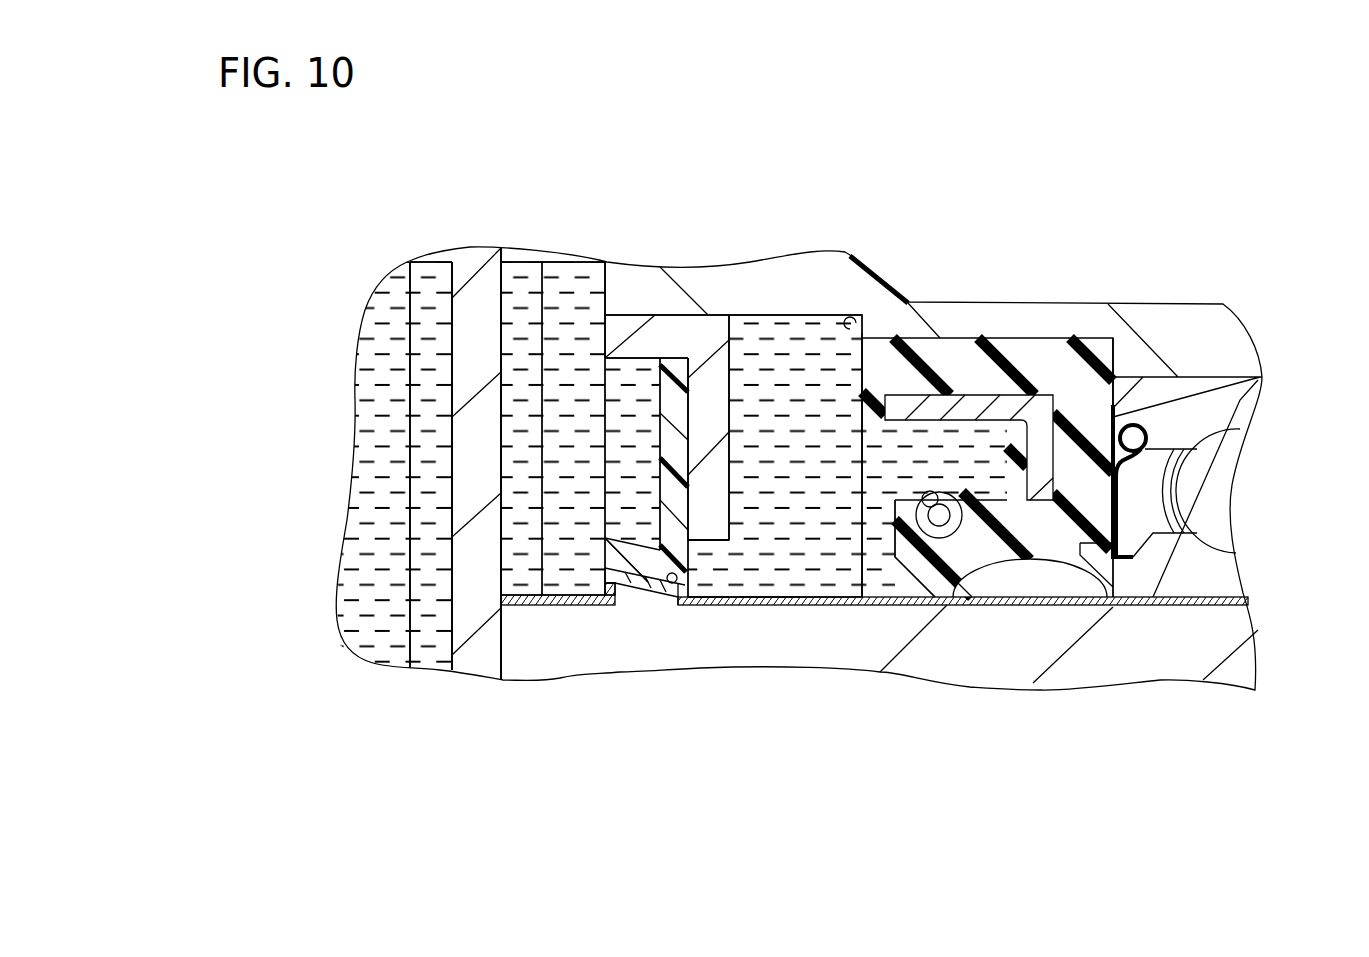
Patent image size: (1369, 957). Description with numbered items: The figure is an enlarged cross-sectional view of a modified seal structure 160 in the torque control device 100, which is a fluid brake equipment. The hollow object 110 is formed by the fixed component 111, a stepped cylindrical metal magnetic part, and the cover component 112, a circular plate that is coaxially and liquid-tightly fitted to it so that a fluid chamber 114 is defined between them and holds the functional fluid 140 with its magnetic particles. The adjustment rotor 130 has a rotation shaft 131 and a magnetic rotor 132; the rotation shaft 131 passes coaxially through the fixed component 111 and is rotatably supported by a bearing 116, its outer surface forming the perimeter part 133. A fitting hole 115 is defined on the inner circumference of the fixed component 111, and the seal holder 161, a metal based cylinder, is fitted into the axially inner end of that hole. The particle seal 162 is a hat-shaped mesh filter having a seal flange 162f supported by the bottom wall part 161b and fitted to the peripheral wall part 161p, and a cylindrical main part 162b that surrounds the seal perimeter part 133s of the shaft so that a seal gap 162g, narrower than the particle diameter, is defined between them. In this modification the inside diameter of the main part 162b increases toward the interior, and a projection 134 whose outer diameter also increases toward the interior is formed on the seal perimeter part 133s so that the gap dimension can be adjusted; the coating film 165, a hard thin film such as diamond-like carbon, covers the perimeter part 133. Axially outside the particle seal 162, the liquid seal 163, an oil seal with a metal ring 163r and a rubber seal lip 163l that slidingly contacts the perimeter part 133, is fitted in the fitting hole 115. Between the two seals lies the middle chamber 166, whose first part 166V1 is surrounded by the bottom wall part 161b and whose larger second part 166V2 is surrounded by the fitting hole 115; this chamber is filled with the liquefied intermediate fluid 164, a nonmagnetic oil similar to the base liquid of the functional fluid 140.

The torque control device 100 is at (1235, 236).
The hollow object 110 is at (433, 152).
The fixed component 111 is at (635, 278).
The cover component 112 is at (412, 287).
The fluid chamber 114 is at (560, 597).
The fitting hole 115 is at (827, 430).
The bearing 116 is at (1240, 405).
The adjustment rotor 130 is at (272, 595).
The rotation shaft 131 is at (510, 647).
The magnetic rotor 132 is at (463, 568).
The perimeter part 133 is at (900, 605).
The seal perimeter part 133s is at (672, 585).
The projection 134 is at (642, 585).
The functional fluid 140 is at (630, 580).
The seal structure 160 is at (1125, 575).
The seal holder 161 is at (648, 155).
The peripheral wall part 161p is at (657, 333).
The bottom wall part 161b is at (703, 490).
The particle seal 162 is at (762, 192).
The seal flange 162f is at (680, 418).
The main part 162b is at (700, 555).
The seal gap 162g is at (650, 600).
The liquid seal 163 is at (1178, 762).
The seal lip 163l is at (978, 560).
The metal ring 163r is at (1033, 490).
The intermediate fluid 164 is at (960, 440).
The coating film 165 is at (641, 600).
The middle chamber 166 is at (691, 762).
The first part 166V1 is at (722, 600).
The second part 166V2 is at (775, 600).